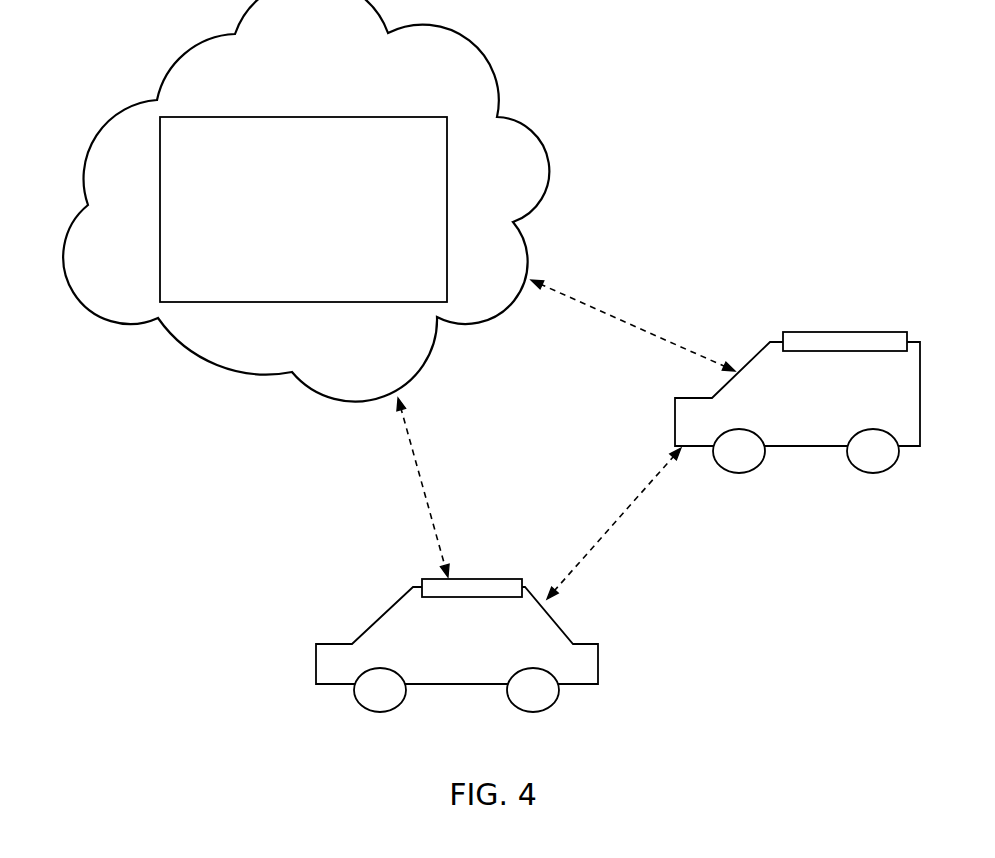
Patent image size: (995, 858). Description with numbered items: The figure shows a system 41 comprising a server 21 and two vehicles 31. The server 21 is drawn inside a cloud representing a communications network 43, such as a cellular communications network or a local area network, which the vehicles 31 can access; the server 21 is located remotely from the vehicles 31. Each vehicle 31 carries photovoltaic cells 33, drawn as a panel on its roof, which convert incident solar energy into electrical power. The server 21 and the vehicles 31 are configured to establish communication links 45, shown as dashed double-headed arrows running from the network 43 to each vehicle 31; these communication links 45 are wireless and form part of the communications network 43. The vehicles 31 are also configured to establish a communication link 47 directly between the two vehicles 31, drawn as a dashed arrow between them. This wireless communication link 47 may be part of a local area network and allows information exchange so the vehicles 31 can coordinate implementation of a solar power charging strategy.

The server 21 is at (448, 195).
The vehicle 31 is at (797, 447).
The photovoltaic cells 33 is at (840, 331).
The system 41 is at (760, 126).
The communications network 43 is at (507, 91).
The communication links 45 is at (635, 325).
The communication link 47 is at (628, 513).